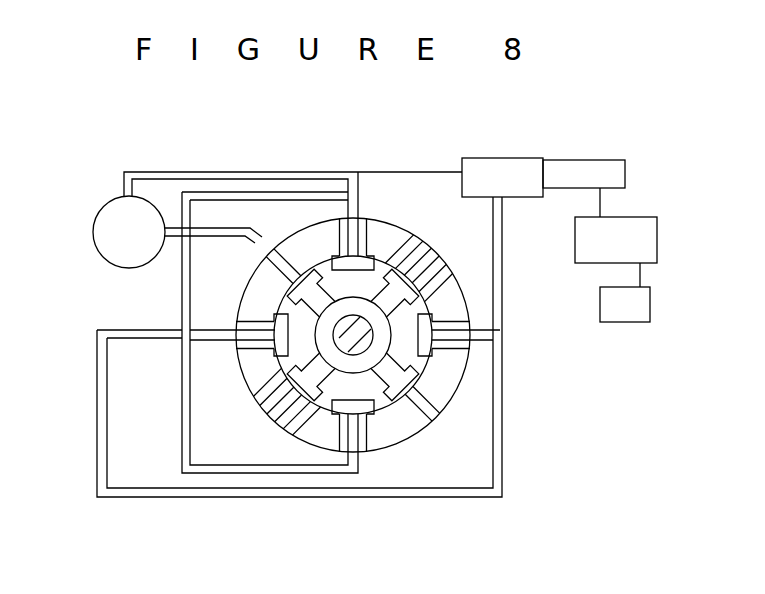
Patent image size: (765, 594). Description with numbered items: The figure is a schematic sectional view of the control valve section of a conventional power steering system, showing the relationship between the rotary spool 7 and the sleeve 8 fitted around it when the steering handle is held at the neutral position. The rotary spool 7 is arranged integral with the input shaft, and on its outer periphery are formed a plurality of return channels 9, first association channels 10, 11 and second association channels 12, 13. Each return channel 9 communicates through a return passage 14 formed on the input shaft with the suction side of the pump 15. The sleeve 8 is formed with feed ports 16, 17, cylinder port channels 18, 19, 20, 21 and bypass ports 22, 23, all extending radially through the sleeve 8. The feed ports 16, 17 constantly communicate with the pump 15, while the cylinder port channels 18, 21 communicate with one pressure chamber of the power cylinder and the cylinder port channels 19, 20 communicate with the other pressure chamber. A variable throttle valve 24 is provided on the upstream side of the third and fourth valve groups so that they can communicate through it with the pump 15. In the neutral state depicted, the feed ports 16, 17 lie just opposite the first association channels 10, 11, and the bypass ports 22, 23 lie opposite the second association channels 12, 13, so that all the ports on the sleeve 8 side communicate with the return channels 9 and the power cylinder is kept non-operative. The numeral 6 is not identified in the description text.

The shaft 6 is at (363, 322).
The rotary spool 7 is at (300, 378).
The sleeve 8 is at (456, 273).
The return channels 9 is at (298, 272).
The first association channel 10 is at (347, 222).
The first association channel 11 is at (380, 433).
The second association channel 12 is at (240, 326).
The second association channel 13 is at (468, 321).
The return passage 14 is at (345, 432).
The pump 15 is at (96, 232).
The feed port 16 is at (366, 222).
The feed port 17 is at (349, 370).
The cylinder port channel 18 is at (318, 258).
The cylinder port channel 19 is at (386, 262).
The cylinder port channel 20 is at (312, 438).
The cylinder port channel 21 is at (406, 445).
The bypass port 22 is at (246, 343).
The bypass port 23 is at (488, 345).
The variable throttle valve 24 is at (525, 180).